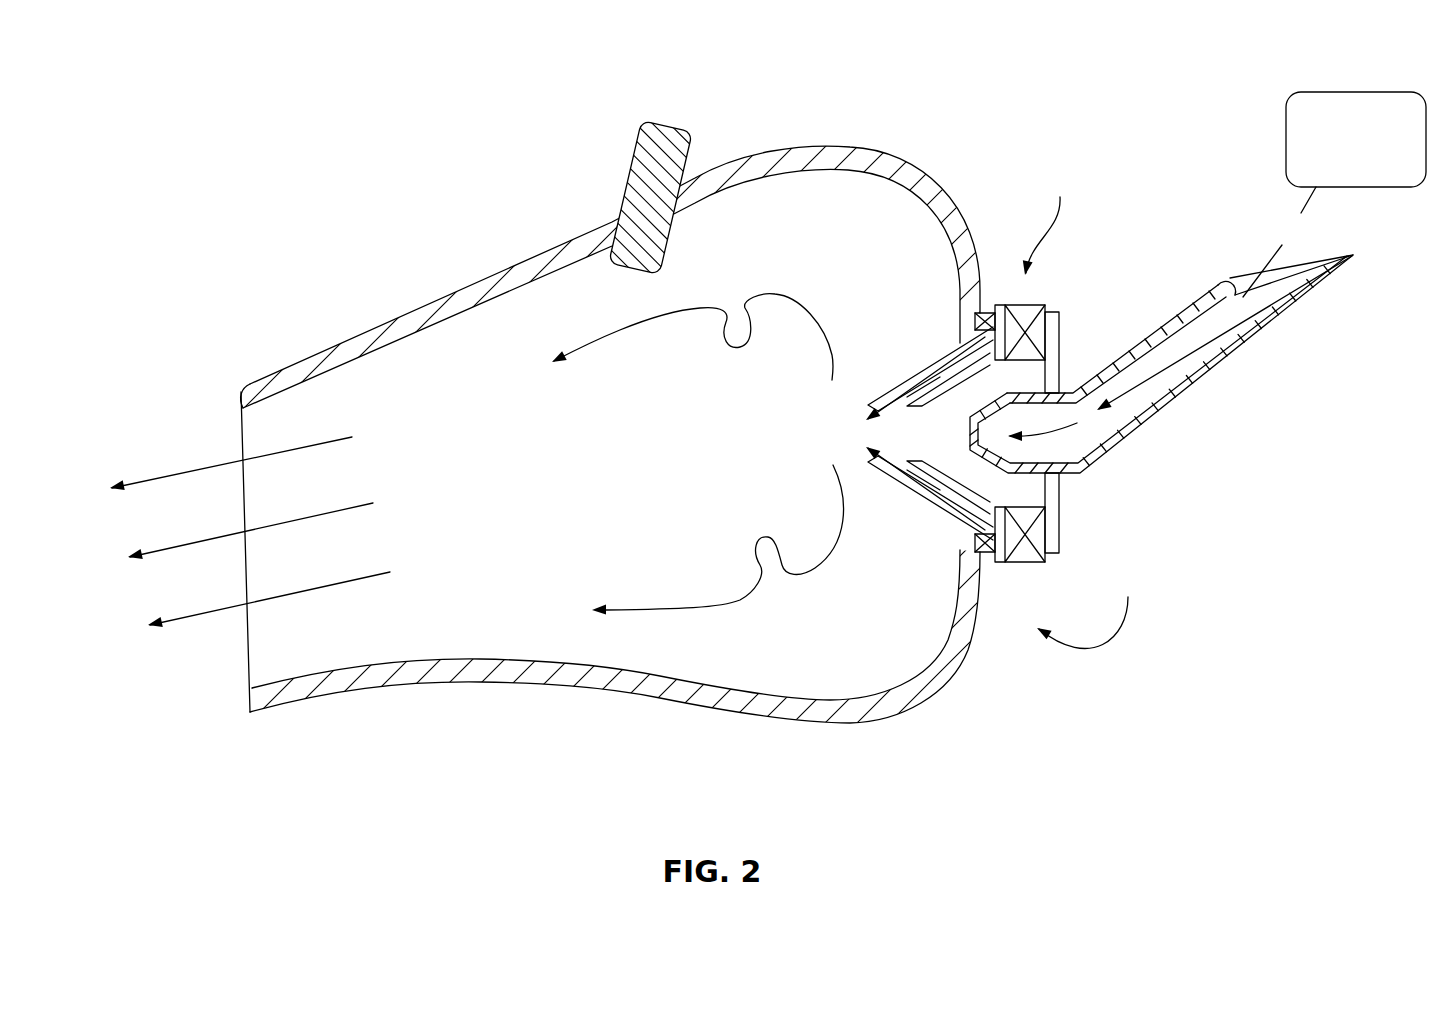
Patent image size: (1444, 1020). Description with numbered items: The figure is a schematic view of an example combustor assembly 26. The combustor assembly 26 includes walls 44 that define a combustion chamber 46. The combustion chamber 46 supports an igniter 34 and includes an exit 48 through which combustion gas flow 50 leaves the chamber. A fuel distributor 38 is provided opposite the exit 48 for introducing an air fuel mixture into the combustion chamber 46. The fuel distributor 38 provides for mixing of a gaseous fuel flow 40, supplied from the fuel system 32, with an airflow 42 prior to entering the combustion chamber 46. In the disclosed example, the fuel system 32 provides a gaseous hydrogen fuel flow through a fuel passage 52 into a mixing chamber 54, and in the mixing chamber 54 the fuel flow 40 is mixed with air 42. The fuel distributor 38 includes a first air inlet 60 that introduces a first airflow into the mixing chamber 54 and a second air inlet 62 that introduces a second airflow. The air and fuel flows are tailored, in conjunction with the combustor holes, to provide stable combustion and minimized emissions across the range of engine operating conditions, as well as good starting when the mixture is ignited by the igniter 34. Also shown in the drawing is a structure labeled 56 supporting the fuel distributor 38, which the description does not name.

The combustor assembly 26 is at (1216, 70).
The fuel system 32 is at (1372, 92).
The igniter 34 is at (645, 167).
The fuel distributor 38 is at (1115, 476).
The gaseous fuel flow 40 is at (1261, 230).
The airflow 42 is at (1170, 587).
The walls 44 is at (745, 703).
The combustion chamber 46 is at (579, 476).
The exit 48 is at (221, 666).
The combustion gas flow 50 is at (175, 441).
The fuel passage 52 is at (1127, 357).
The mixing chamber 54 is at (1013, 487).
The nozzle support stem 56 is at (1060, 500).
The first air inlet 60 is at (1048, 293).
The second air inlet 62 is at (989, 291).